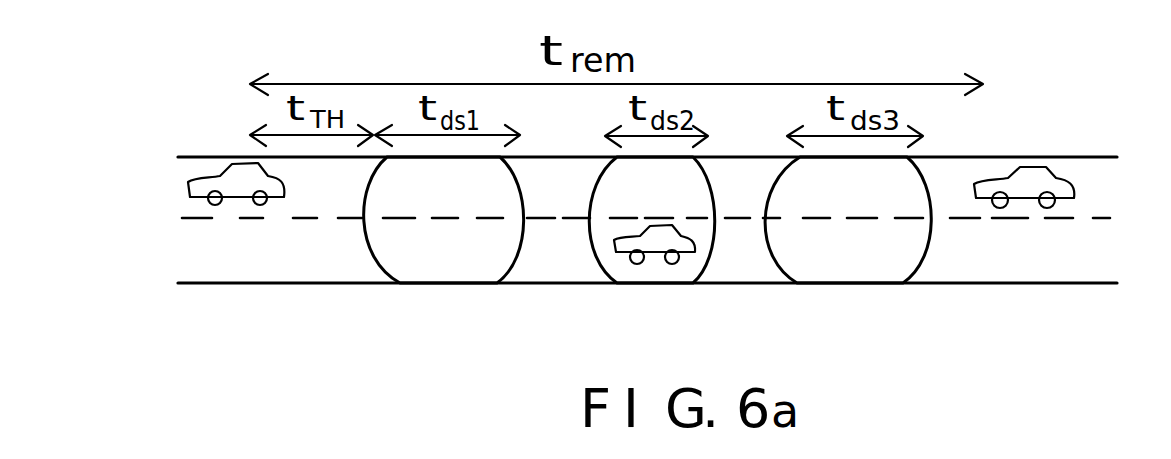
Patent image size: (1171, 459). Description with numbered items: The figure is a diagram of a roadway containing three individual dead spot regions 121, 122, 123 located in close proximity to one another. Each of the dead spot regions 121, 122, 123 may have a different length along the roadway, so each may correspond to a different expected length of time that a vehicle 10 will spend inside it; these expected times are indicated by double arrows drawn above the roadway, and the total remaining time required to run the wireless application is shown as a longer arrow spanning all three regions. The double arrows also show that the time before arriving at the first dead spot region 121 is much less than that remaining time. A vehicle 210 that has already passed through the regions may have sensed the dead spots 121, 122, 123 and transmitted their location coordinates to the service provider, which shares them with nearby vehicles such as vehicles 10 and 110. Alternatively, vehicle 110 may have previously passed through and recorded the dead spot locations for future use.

The vehicle 10 is at (658, 243).
The vehicle 110 is at (246, 182).
The vehicle 210 is at (1031, 175).
The dead spot region 121 is at (453, 258).
The dead spot region 122 is at (683, 275).
The dead spot region 123 is at (873, 272).